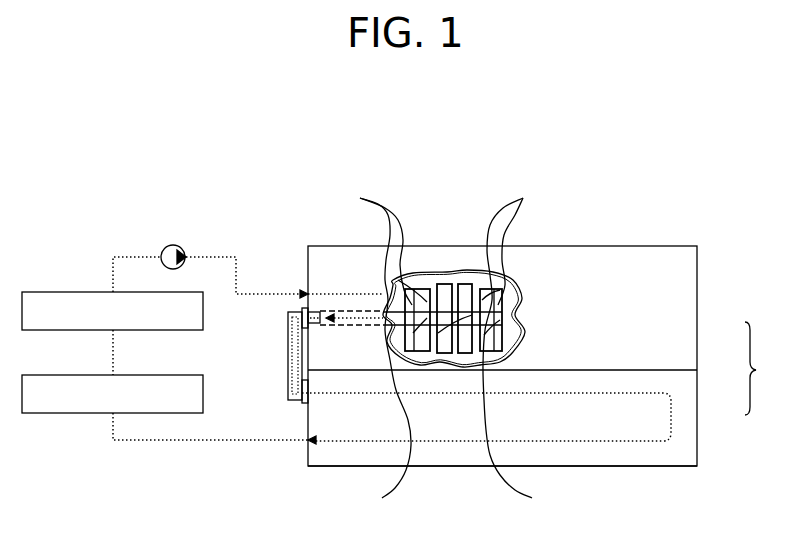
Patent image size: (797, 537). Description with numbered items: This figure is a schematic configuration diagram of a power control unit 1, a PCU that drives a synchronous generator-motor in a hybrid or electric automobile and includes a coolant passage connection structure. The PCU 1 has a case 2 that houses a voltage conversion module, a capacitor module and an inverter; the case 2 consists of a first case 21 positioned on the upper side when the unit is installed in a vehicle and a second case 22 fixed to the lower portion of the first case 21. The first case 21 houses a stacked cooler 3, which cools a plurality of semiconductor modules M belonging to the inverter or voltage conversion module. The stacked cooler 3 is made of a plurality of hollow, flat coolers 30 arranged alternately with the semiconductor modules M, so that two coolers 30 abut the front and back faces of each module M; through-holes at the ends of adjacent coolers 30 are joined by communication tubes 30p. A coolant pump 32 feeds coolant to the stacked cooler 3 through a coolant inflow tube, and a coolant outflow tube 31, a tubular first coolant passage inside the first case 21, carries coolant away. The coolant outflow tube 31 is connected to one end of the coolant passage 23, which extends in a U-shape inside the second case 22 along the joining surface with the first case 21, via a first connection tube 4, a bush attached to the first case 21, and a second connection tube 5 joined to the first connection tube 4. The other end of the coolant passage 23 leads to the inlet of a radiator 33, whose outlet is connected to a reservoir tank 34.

The power control unit 1 is at (706, 263).
The case 2 is at (758, 368).
The first case 21 is at (690, 333).
The second case 22 is at (690, 405).
The coolant passage 23 is at (623, 445).
The stacked cooler 3 is at (457, 288).
The coolers 30 is at (480, 335).
The communication tube 30p is at (455, 332).
The coolant outflow tube 31 is at (348, 322).
The coolant pump 32 is at (173, 244).
The radiator 33 is at (66, 374).
The reservoir tank 34 is at (66, 291).
The first connection tube 4 is at (315, 310).
The second connection tube 5 is at (287, 353).
The semiconductor modules M is at (441, 342).